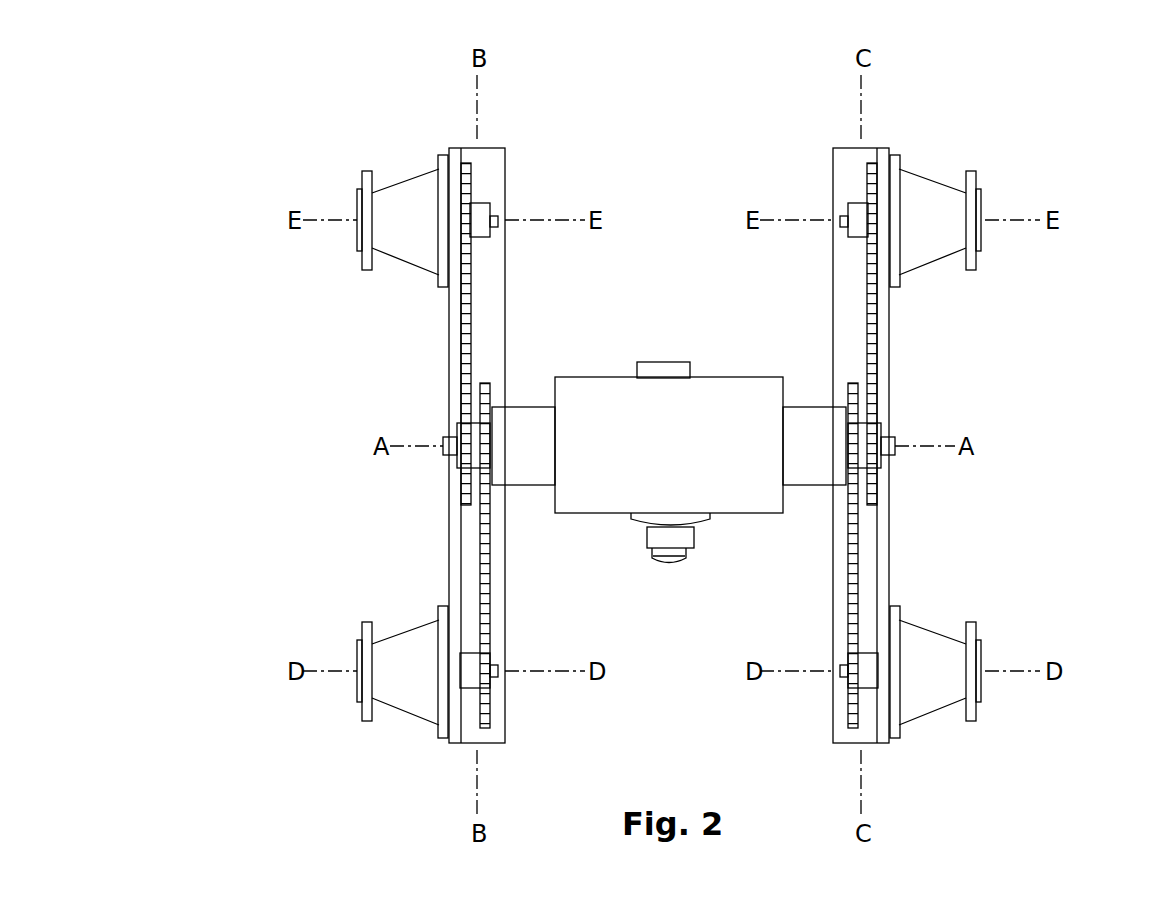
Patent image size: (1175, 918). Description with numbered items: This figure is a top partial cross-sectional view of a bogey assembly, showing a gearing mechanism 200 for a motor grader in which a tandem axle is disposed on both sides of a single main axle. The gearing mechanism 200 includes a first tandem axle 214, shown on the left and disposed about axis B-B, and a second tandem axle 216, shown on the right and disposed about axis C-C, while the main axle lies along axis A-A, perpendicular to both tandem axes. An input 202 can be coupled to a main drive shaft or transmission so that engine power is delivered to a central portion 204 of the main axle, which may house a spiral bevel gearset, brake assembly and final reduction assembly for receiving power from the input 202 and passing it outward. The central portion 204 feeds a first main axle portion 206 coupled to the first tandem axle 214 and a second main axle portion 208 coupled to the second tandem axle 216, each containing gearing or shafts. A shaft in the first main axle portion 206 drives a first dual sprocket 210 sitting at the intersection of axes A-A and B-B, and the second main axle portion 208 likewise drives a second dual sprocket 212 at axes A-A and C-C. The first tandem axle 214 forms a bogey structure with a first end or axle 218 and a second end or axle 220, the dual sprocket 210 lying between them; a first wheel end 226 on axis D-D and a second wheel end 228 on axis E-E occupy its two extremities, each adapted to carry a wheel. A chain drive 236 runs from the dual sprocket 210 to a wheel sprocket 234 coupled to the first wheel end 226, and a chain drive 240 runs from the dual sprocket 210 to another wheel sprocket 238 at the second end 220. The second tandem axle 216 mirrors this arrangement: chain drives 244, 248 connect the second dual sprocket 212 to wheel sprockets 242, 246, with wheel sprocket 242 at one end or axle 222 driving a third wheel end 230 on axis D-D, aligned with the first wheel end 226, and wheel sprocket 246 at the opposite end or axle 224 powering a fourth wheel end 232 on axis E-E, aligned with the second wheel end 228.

The gearing mechanism 200 is at (136, 142).
The input 202 is at (671, 565).
The central portion 204 is at (662, 330).
The first main axle portion 206 is at (527, 400).
The second main axle portion 208 is at (815, 400).
The first dual sprocket 210 is at (466, 418).
The second dual sprocket 212 is at (872, 432).
The first tandem axle 214 is at (310, 480).
The second tandem axle 216 is at (1035, 488).
The first end or axle 218 is at (438, 576).
The second end or axle 220 is at (515, 257).
The end or axle of second tandem axle 222 is at (907, 576).
The opposite end or axle of second tandem axle 224 is at (824, 257).
The first wheel end 226 is at (345, 692).
The second wheel end 228 is at (345, 197).
The third wheel end 230 is at (995, 692).
The fourth wheel end 232 is at (995, 197).
The wheel sprocket 234 is at (487, 705).
The chain drive 236 is at (490, 565).
The wheel sprocket 238 is at (465, 165).
The chain drive 240 is at (464, 334).
The wheel sprocket 242 is at (855, 705).
The chain drive 244 is at (852, 565).
The wheel sprocket 246 is at (875, 165).
The chain drive 248 is at (876, 333).